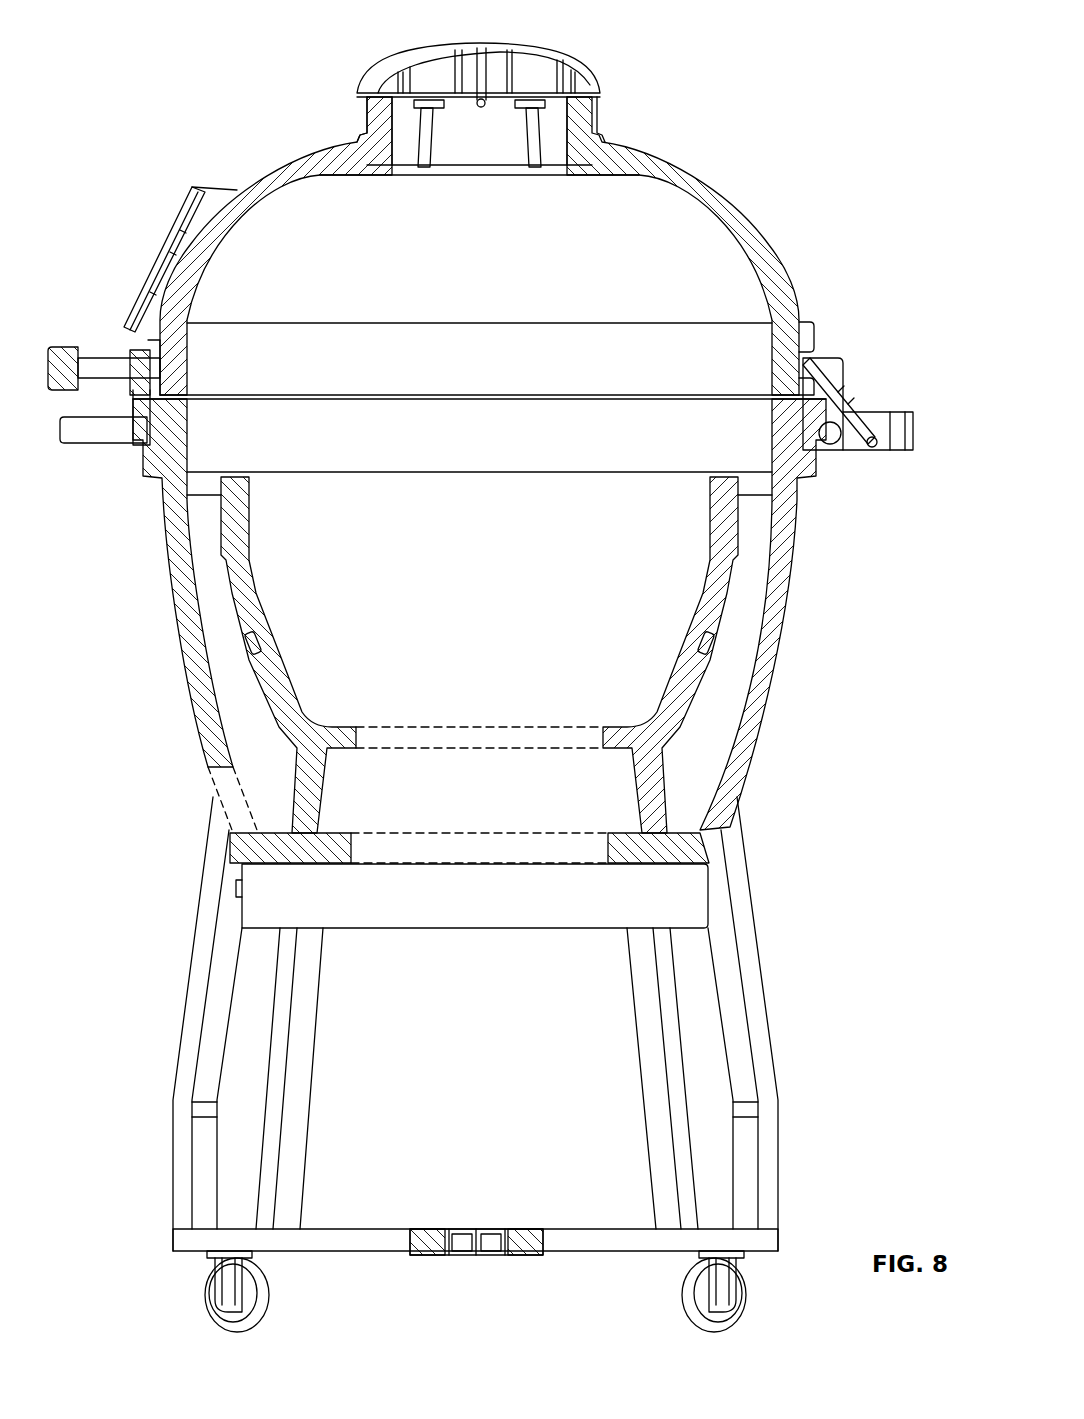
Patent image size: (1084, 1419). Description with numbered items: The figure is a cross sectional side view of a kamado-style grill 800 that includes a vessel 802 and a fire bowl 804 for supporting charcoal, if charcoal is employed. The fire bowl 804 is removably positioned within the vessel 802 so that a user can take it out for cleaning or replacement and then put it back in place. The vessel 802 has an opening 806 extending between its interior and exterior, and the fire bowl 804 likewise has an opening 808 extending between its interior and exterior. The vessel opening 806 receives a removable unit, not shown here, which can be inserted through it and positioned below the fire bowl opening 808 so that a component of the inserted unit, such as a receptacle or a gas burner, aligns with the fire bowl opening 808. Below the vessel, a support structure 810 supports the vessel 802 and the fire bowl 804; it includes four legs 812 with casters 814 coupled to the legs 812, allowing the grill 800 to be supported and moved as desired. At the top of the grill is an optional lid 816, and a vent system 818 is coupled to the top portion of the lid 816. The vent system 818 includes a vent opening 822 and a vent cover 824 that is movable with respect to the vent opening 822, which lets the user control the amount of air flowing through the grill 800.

The kamado-style grill 800 is at (808, 42).
The vessel 802 is at (172, 622).
The fire bowl 804 is at (742, 512).
The vessel opening 806 is at (208, 787).
The fire bowl opening 808 is at (515, 725).
The support structure 810 is at (533, 1066).
The legs 812 is at (302, 1103).
The casters 814 is at (746, 1300).
The lid 816 is at (748, 218).
The vent system 818 is at (529, 111).
The vent opening 822 is at (483, 150).
The vent cover 824 is at (530, 60).